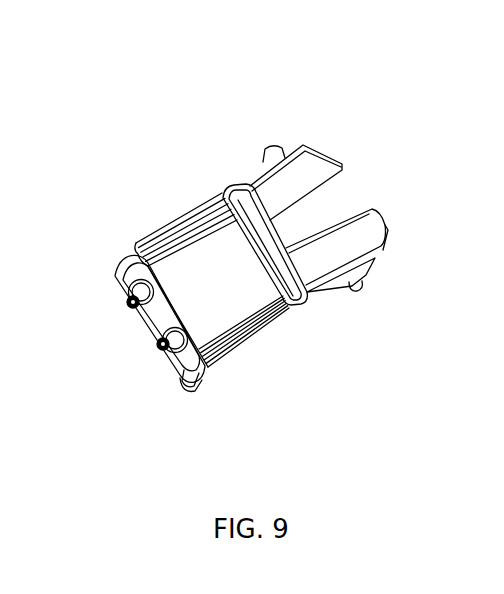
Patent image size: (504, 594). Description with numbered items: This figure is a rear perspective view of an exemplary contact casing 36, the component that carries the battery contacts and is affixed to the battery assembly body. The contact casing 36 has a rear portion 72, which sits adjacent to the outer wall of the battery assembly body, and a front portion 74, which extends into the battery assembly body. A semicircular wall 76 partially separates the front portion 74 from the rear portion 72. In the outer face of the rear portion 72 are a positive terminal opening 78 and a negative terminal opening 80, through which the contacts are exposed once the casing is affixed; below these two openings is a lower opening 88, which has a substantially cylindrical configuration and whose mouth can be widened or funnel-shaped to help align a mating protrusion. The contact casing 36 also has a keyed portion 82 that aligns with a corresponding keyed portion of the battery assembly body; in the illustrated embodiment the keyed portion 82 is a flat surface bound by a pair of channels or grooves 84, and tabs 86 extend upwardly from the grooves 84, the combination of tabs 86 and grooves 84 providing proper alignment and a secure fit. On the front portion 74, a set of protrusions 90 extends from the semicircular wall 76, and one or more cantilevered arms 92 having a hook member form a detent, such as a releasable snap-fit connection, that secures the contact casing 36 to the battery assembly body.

The contact casing 36 is at (251, 248).
The rear portion 72 is at (225, 367).
The front portion 74 is at (323, 145).
The semicircular wall 76 is at (283, 270).
The positive terminal opening 78 is at (173, 370).
The negative terminal opening 80 is at (122, 280).
The keyed portion 82 is at (220, 305).
The grooves 84 is at (183, 230).
The tabs 86 is at (140, 262).
The lower opening 88 is at (143, 335).
The protrusions 90 is at (365, 220).
The cantilevered arms 92 is at (362, 280).